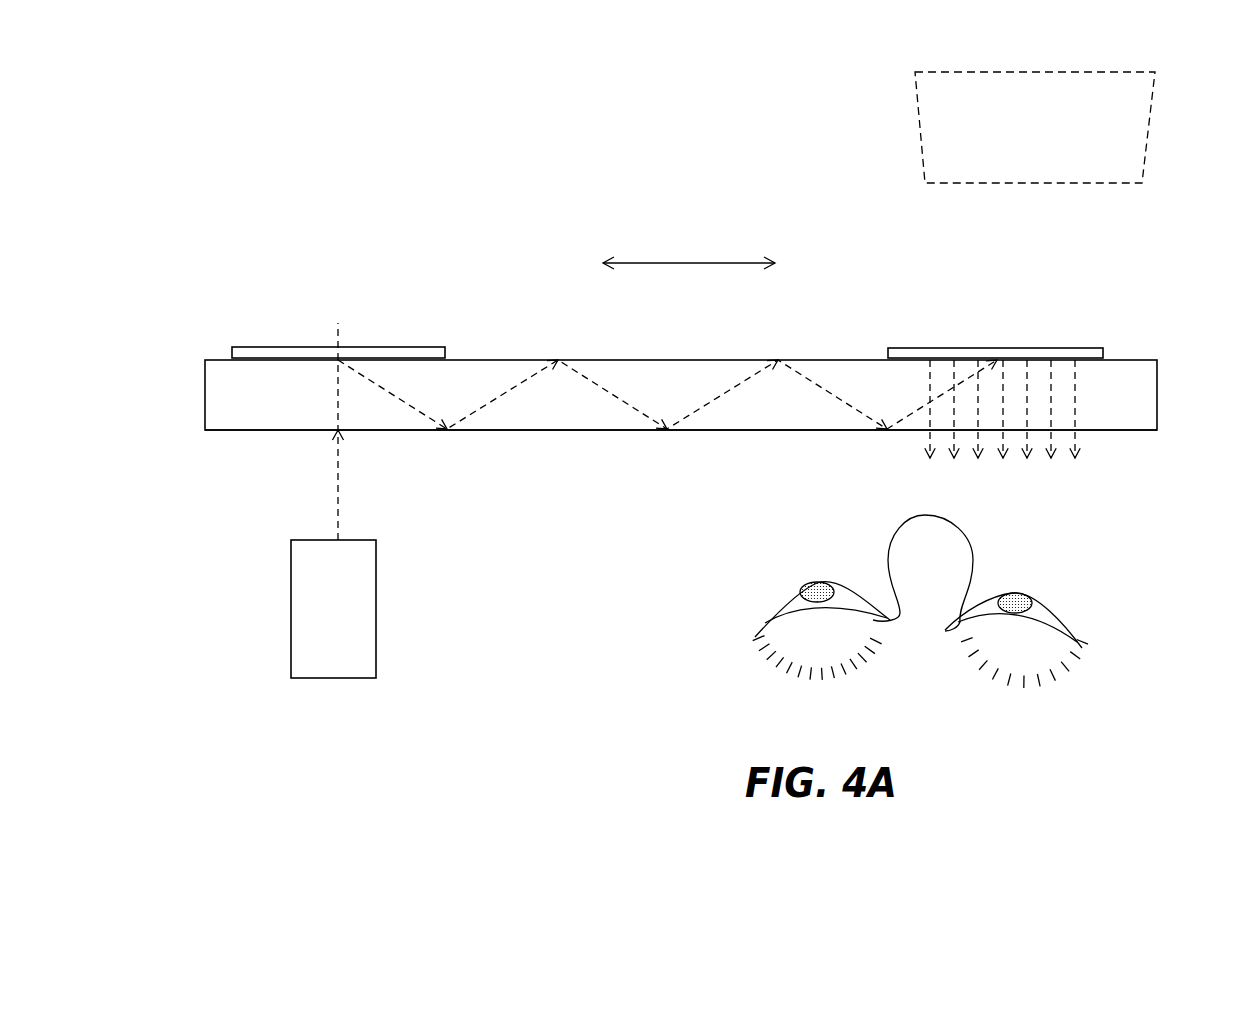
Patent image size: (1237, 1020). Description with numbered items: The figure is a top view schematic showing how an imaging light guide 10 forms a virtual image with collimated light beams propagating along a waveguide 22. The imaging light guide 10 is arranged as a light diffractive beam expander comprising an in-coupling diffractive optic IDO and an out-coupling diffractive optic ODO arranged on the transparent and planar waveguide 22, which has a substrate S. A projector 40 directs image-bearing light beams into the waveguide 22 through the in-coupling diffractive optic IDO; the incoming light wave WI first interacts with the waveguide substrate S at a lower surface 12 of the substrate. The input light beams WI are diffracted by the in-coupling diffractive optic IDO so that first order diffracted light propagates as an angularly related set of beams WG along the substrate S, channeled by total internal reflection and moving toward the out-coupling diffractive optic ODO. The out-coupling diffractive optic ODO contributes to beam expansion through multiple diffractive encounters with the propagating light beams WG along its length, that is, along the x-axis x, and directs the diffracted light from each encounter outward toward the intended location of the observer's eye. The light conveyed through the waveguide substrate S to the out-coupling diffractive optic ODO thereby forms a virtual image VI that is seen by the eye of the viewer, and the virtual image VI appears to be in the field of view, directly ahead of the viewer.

The imaging light guide 10 is at (701, 458).
The lower surface 12 is at (542, 431).
The waveguide 22 is at (840, 431).
The projector 40 is at (333, 609).
The in-coupling diffractive optic IDO is at (435, 347).
The out-coupling diffractive optic ODO is at (1103, 340).
The light beams propagating along the substrate WG is at (722, 393).
The substrate S is at (1025, 409).
The incoming image-bearing light beams WI is at (366, 431).
The virtual image VI is at (922, 148).
The x-axis x is at (668, 263).